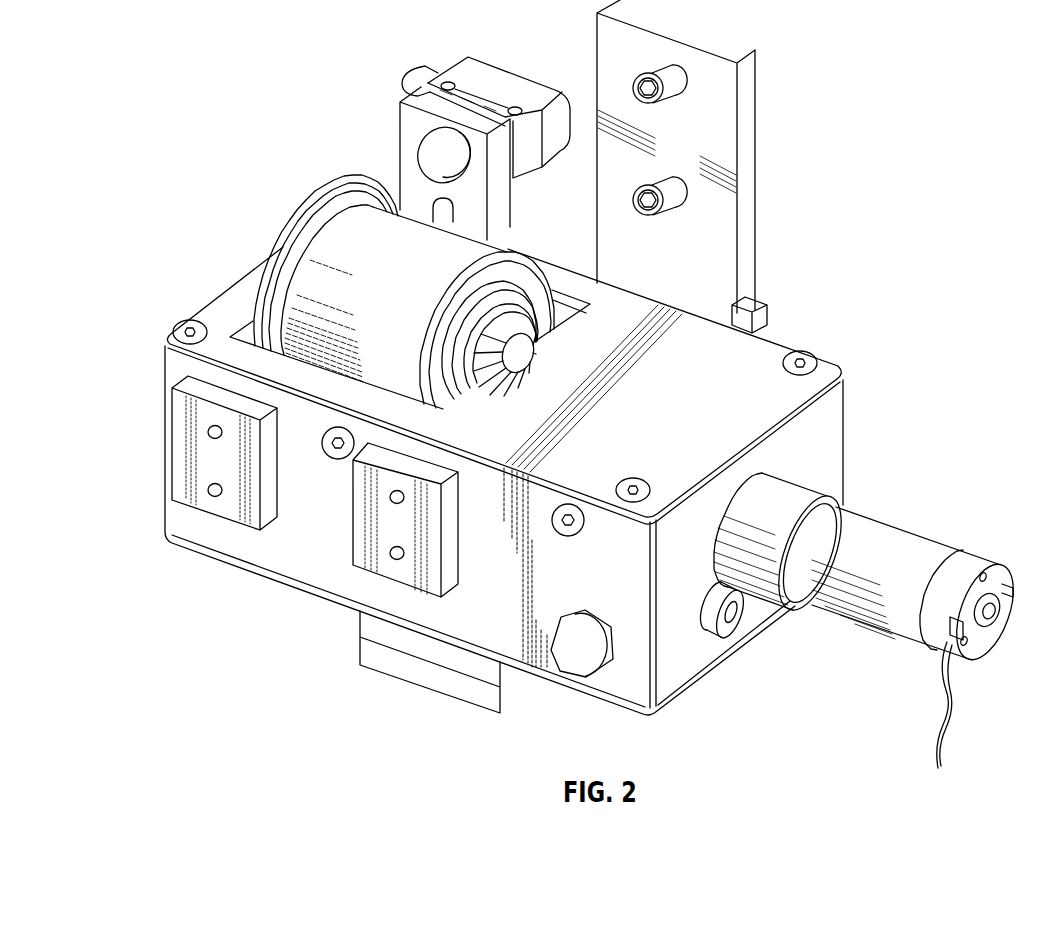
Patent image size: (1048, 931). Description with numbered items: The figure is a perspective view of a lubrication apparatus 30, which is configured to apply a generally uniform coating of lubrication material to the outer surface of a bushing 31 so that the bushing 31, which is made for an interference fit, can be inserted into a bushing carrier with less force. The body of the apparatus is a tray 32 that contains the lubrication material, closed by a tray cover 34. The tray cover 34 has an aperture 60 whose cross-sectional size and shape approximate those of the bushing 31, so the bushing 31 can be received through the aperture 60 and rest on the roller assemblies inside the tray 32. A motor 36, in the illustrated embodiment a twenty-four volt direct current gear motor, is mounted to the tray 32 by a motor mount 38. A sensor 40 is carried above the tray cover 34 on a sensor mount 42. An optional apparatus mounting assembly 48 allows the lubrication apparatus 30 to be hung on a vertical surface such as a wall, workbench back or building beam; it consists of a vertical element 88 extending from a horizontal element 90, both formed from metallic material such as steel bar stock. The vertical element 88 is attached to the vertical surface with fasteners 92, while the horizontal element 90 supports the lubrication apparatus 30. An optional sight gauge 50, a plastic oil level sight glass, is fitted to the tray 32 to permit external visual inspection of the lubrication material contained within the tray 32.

The lubrication apparatus 30 is at (600, 384).
The bushing 31 is at (321, 196).
The tray 32 is at (690, 668).
The tray cover 34 is at (778, 350).
The motor 36 is at (935, 548).
The motor mount 38 is at (800, 493).
The sensor 40 is at (517, 70).
The sensor mount 42 is at (398, 157).
The apparatus mounting assembly 48 is at (757, 197).
The sight gauge 50 is at (604, 688).
The aperture 60 is at (565, 330).
The vertical element 88 is at (707, 166).
The horizontal element 90 is at (530, 688).
The fasteners 92 is at (667, 102).